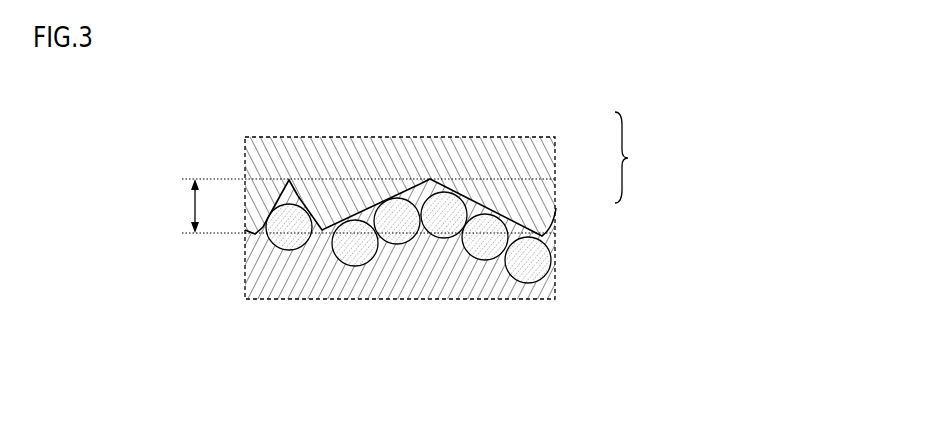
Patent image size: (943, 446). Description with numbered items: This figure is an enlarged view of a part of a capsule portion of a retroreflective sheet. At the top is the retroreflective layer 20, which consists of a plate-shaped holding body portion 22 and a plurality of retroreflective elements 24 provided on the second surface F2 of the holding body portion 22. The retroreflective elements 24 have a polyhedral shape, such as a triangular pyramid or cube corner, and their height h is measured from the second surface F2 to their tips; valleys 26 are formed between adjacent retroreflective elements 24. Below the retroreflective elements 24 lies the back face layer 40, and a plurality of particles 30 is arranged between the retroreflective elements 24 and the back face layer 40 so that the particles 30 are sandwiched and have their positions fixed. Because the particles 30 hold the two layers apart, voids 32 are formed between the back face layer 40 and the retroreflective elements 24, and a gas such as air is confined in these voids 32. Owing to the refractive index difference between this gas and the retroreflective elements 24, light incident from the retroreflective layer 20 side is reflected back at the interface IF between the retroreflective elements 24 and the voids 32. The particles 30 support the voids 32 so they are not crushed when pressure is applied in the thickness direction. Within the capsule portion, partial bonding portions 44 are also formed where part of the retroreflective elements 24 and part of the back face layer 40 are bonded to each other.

The retroreflective layer 20 is at (634, 157).
The holding body portion 22 is at (538, 151).
The retroreflective elements 24 is at (550, 215).
The valleys 26 is at (426, 192).
The particles 30 is at (527, 262).
The voids 32 is at (431, 179).
The back face layer 40 is at (390, 272).
The partial bonding portions 44 is at (322, 230).
The interface IF is at (421, 184).
The second surface F2 is at (487, 178).
The height of the retroreflective elements h is at (184, 206).